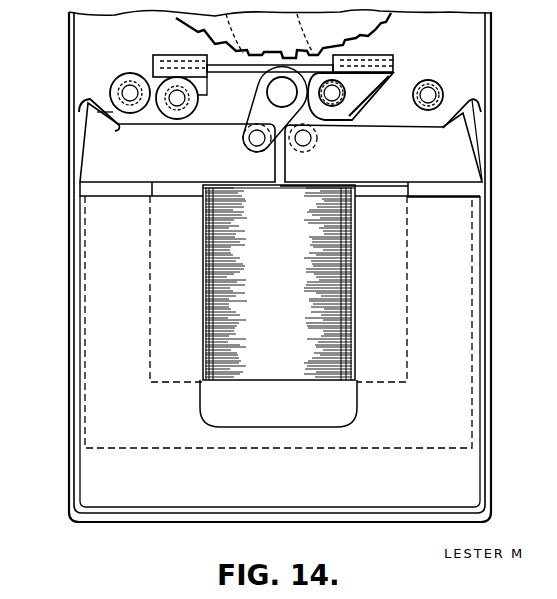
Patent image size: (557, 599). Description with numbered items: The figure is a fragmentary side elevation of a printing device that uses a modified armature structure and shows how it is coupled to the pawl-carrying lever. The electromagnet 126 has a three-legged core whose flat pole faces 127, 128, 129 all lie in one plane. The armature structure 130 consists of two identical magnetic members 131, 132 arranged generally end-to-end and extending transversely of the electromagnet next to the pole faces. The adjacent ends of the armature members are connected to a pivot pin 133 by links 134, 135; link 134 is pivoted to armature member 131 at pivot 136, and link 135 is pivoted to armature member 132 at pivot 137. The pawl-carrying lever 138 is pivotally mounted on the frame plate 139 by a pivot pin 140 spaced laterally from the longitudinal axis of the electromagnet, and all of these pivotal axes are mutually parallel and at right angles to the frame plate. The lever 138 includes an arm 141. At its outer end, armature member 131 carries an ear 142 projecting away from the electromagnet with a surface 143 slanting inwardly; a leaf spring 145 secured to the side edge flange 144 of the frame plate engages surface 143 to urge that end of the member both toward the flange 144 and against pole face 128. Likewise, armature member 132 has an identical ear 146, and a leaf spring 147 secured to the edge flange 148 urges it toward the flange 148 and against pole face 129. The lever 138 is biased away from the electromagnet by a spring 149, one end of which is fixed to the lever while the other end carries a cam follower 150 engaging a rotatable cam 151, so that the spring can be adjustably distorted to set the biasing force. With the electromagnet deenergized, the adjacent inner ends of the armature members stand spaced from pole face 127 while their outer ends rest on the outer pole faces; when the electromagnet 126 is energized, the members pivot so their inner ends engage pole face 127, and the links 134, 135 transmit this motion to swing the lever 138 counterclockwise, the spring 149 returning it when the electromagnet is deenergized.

The electromagnet 126 is at (106, 453).
The pole face 127 is at (328, 182).
The pole face 128 is at (141, 180).
The pole face 129 is at (412, 182).
The armature structure 130 is at (386, 105).
The magnetic member 131 is at (100, 148).
The magnetic member 132 is at (460, 147).
The pivot pin 133 is at (272, 91).
The link 134 is at (249, 113).
The link 135 is at (320, 118).
The pivot 136 is at (250, 136).
The pivot 137 is at (306, 140).
The pawl-carrying lever 138 is at (378, 50).
The frame plate 139 is at (119, 43).
The pivot pin 140 is at (337, 88).
The arm 141 is at (228, 53).
The ear 142 is at (97, 121).
The surface 143 is at (108, 128).
The side edge flange 144 is at (72, 68).
The leaf spring 145 is at (80, 106).
The ear 146 is at (470, 118).
The leaf spring 147 is at (478, 100).
The edge flange 148 is at (492, 63).
The spring 149 is at (207, 71).
The cam follower 150 is at (155, 64).
The cam 151 is at (180, 114).